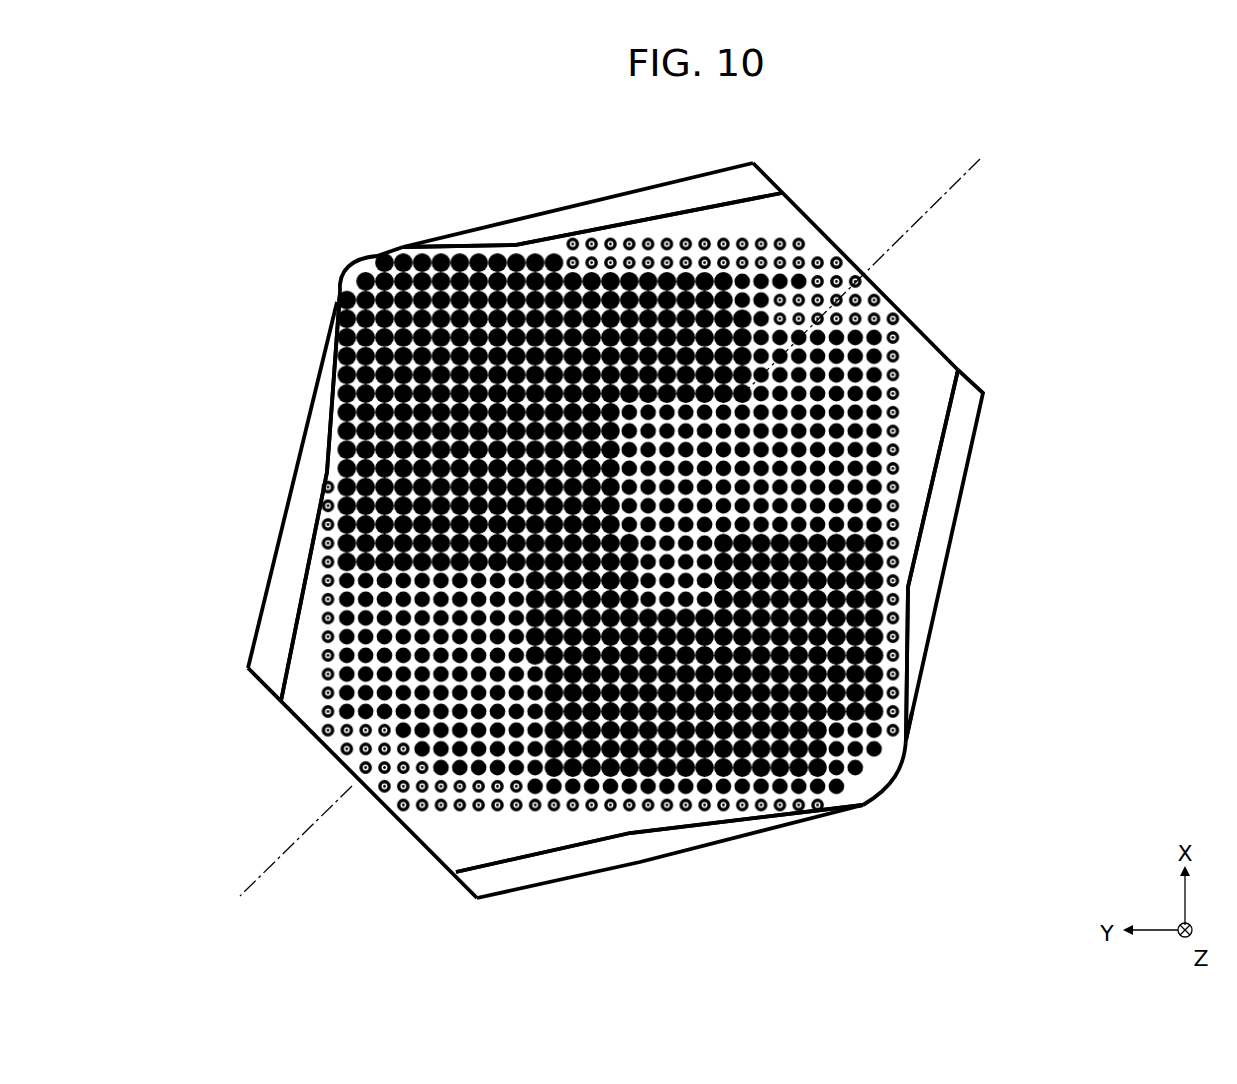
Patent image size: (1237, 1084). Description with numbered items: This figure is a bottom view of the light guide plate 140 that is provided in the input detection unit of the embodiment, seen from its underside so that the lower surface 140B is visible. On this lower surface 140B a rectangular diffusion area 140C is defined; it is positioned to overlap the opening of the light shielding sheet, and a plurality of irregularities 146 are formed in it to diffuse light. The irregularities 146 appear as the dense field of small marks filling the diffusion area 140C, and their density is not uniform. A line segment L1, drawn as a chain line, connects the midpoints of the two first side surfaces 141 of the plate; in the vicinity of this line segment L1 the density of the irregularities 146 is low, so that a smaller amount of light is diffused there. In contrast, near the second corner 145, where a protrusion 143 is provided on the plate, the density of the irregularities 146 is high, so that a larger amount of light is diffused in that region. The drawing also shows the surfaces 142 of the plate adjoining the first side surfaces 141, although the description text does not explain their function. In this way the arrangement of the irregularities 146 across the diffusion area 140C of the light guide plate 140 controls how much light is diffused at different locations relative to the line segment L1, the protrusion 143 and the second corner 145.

The light guide plate 140 is at (1065, 114).
The lower surface 140B is at (923, 430).
The diffusion area 140C is at (693, 471).
The first side surface 141 is at (926, 336).
The inclined surface 142 is at (575, 216).
The protrusion 143 is at (356, 288).
The second corner 145 is at (381, 242).
The irregularities 146 is at (897, 467).
The line segment L1 is at (978, 166).